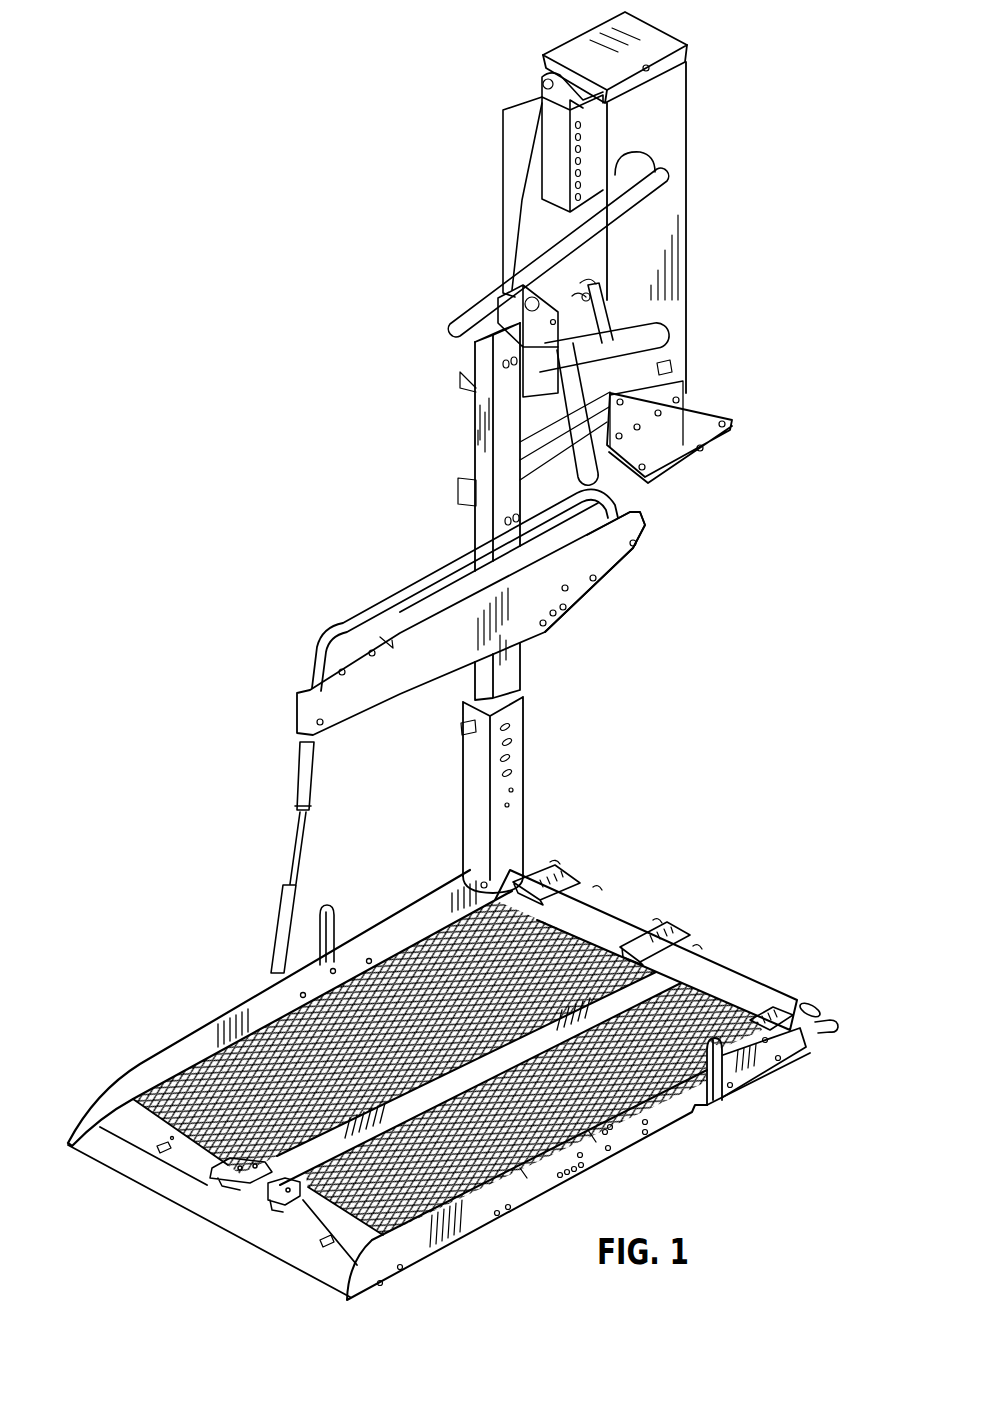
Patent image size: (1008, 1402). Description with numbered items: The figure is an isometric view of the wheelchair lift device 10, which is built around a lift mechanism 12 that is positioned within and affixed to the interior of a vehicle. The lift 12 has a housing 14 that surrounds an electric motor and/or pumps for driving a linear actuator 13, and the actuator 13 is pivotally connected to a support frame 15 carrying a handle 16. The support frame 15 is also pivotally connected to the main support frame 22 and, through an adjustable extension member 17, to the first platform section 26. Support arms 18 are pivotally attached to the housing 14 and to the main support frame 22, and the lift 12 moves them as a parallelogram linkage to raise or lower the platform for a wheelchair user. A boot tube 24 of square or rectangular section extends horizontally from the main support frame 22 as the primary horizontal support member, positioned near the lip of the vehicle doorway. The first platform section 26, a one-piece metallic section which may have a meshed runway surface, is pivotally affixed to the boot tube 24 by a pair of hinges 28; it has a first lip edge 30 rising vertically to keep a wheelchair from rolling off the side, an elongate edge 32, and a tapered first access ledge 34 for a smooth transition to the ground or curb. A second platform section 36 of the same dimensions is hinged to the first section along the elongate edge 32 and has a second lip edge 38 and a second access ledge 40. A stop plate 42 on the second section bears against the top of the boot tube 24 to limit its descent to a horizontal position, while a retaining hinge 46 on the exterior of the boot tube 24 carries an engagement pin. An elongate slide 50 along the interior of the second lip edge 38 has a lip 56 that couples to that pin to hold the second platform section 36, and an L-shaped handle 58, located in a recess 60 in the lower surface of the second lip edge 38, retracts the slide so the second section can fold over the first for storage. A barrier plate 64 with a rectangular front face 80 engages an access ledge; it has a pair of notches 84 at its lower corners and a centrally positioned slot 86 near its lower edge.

The wheelchair lift device 10 is at (216, 524).
The lift mechanism 12 is at (712, 156).
The linear actuator 13 is at (585, 295).
The housing 14 is at (692, 107).
The support frame 15 is at (640, 520).
The handle 16 is at (463, 557).
The adjustable extension member 17 is at (298, 778).
The support arms 18 is at (563, 240).
The main support frame 22 is at (483, 433).
The boot tube 24 is at (720, 973).
The first platform section 26 is at (195, 1100).
The hinges 28 is at (590, 875).
The first lip edge 30 is at (219, 1020).
The elongate edge 32 is at (523, 1167).
The first access ledge 34 is at (128, 1160).
The second platform section 36 is at (590, 1130).
The second lip edge 38 is at (470, 1200).
The second access ledge 40 is at (288, 1257).
The stop plate 42 is at (770, 1013).
The retaining hinge 46 is at (812, 1008).
The elongate slide 50 is at (814, 1040).
The lip 56 is at (838, 1022).
The L-shaped handle 58 is at (720, 1090).
The recess 60 is at (699, 1110).
The barrier plate 64 is at (94, 1077).
The front face 80 is at (128, 1122).
The notches 84 is at (110, 1127).
The slot 86 is at (165, 1154).